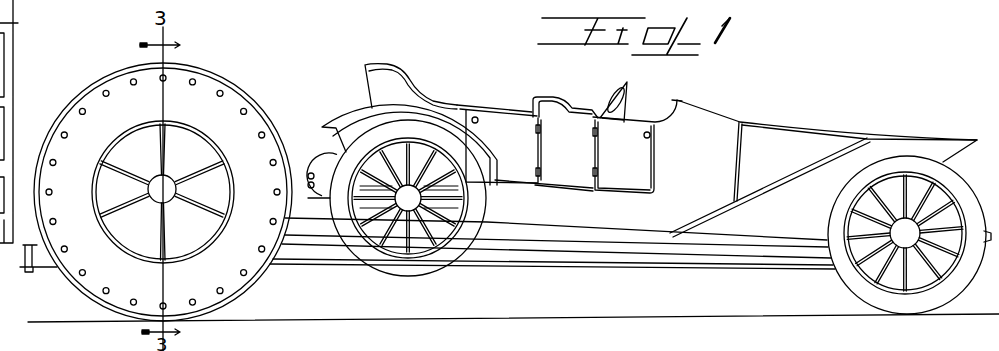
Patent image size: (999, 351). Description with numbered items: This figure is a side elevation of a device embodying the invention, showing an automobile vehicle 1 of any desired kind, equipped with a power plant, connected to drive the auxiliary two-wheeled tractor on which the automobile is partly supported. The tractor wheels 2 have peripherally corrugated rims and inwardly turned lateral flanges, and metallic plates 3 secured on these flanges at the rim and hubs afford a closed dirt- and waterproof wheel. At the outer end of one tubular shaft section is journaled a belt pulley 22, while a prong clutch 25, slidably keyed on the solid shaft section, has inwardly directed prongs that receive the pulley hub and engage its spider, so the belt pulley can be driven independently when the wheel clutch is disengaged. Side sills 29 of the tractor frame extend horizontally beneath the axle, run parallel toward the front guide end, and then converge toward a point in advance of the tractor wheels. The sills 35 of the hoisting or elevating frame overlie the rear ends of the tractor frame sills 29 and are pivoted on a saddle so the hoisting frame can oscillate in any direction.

The automobile vehicle 1 is at (768, 83).
The tractor wheels 2 is at (242, 93).
The metallic plates 3 is at (227, 138).
The belt pulley 22 is at (227, 207).
The prong clutch 25 is at (143, 173).
The side sills 29 is at (335, 255).
The sills of hoisting frame 35 is at (515, 240).